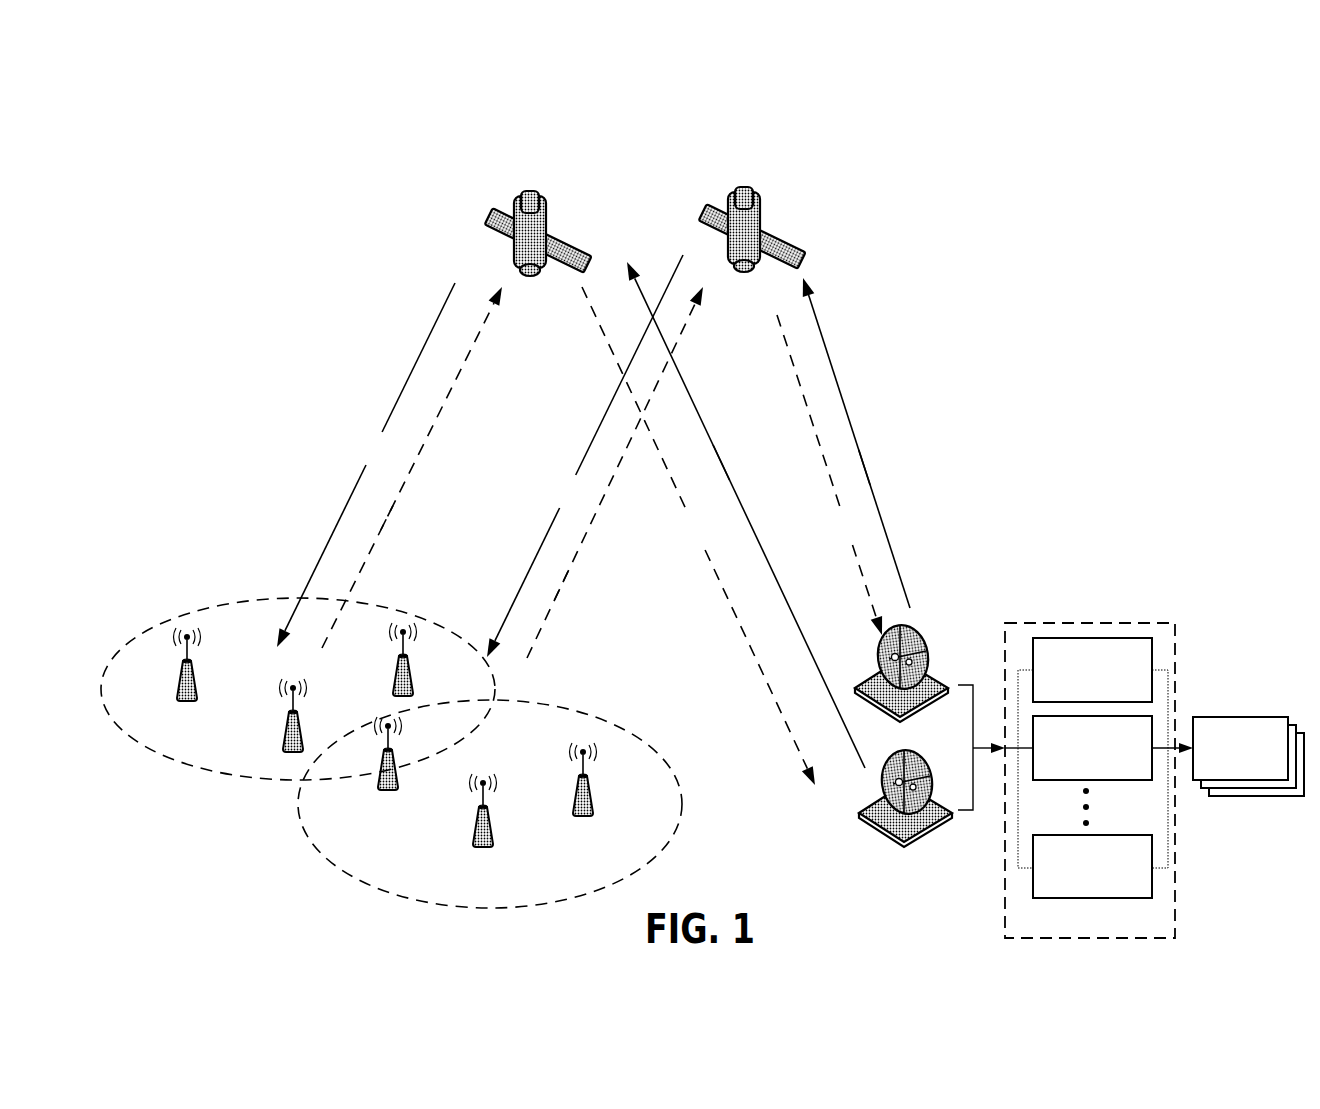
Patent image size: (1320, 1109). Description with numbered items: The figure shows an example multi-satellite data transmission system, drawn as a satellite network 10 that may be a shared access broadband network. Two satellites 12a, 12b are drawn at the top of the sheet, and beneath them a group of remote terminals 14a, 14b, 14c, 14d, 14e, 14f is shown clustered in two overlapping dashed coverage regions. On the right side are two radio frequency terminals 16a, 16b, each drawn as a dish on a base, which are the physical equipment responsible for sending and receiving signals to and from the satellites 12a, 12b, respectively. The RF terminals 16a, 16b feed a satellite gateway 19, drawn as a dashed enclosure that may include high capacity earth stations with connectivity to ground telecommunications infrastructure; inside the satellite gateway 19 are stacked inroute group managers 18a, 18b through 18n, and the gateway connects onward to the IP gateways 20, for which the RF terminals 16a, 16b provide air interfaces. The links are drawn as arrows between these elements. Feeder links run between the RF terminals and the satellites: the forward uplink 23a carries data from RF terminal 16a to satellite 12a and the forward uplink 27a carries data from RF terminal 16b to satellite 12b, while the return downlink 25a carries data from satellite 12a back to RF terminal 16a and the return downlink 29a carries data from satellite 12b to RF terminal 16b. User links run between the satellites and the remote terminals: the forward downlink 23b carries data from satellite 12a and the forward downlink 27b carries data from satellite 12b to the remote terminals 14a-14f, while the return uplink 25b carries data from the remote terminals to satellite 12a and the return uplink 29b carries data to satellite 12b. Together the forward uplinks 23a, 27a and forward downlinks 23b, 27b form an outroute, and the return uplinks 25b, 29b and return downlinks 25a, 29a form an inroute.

The satellite network 10 is at (650, 150).
The satellite 12a is at (563, 240).
The satellite 12b is at (773, 235).
The remote terminal 14a is at (189, 682).
The remote terminal 14b is at (273, 720).
The remote terminal 14c is at (383, 660).
The remote terminal 14d is at (386, 770).
The remote terminal 14e is at (480, 827).
The remote terminal 14f is at (577, 795).
The radio frequency (RF) terminal 16a is at (932, 682).
The radio frequency (RF) terminal 16b is at (876, 827).
The inroute group manager (IGM) 18a is at (1092, 670).
The inroute group manager (IGM) 18b is at (1092, 748).
The inroute group manager (IGM) 18n is at (1092, 866).
The satellite gateway (SGW) 19 is at (1090, 781).
The IP gateways (IPGWs) 20 is at (1248, 756).
The forward uplink 23a is at (746, 515).
The forward downlink 23b is at (366, 465).
The return downlink 25a is at (698, 536).
The return uplink 25b is at (412, 467).
The forward uplink 27a is at (856, 443).
The forward downlink 27b is at (585, 456).
The return downlink 29a is at (829, 475).
The return uplink 29b is at (615, 472).